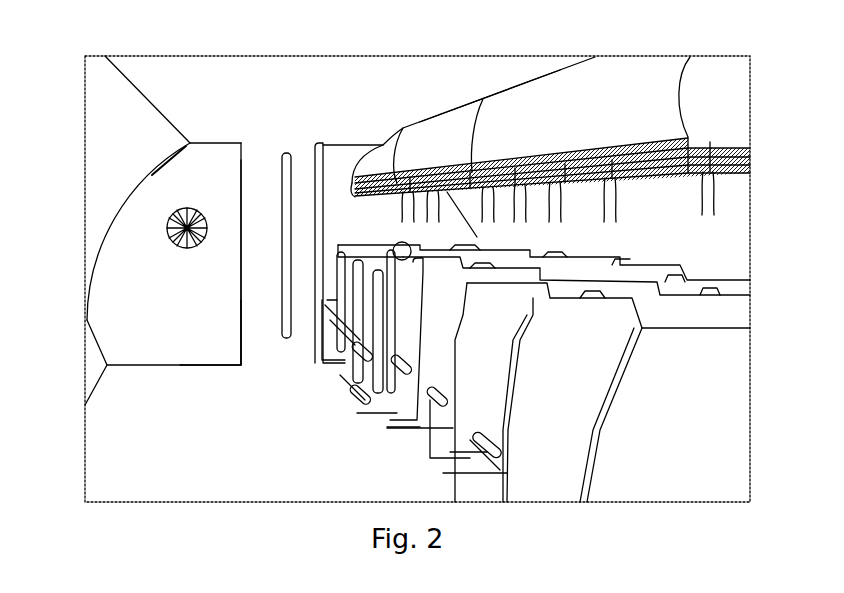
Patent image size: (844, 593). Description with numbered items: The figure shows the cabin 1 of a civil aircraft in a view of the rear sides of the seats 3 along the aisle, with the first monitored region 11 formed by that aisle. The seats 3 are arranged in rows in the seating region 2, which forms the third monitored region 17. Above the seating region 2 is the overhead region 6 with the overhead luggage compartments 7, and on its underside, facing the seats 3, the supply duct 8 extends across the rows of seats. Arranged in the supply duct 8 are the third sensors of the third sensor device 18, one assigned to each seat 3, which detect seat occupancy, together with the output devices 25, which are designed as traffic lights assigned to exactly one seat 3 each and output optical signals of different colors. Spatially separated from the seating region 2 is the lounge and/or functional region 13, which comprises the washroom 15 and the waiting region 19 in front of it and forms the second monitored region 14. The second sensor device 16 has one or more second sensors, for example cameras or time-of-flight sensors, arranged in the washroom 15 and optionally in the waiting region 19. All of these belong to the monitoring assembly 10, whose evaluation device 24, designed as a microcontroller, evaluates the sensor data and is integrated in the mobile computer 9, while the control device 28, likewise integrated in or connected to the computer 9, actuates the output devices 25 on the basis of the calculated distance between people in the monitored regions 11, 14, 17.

The cabin 1 is at (155, 50).
The monitoring assembly 10 is at (63, 97).
The lounge and/or functional region 13 is at (228, 195).
The second monitored region 14 is at (262, 190).
The washroom 15 is at (182, 243).
The second sensor device 16 is at (183, 210).
The waiting region 19 is at (226, 313).
The mobile computer 9 is at (348, 170).
The evaluation device 24 is at (330, 146).
The control device 28 is at (340, 146).
The first monitored region 11 is at (365, 338).
The overhead luggage compartments 7 is at (529, 127).
The overhead region 6 is at (410, 112).
The supply duct 8 is at (746, 195).
The third monitored region 17 is at (722, 248).
The third sensor device 18 is at (710, 142).
The output devices 25 is at (559, 206).
The seats 3 is at (544, 288).
The seating region 2 is at (553, 392).